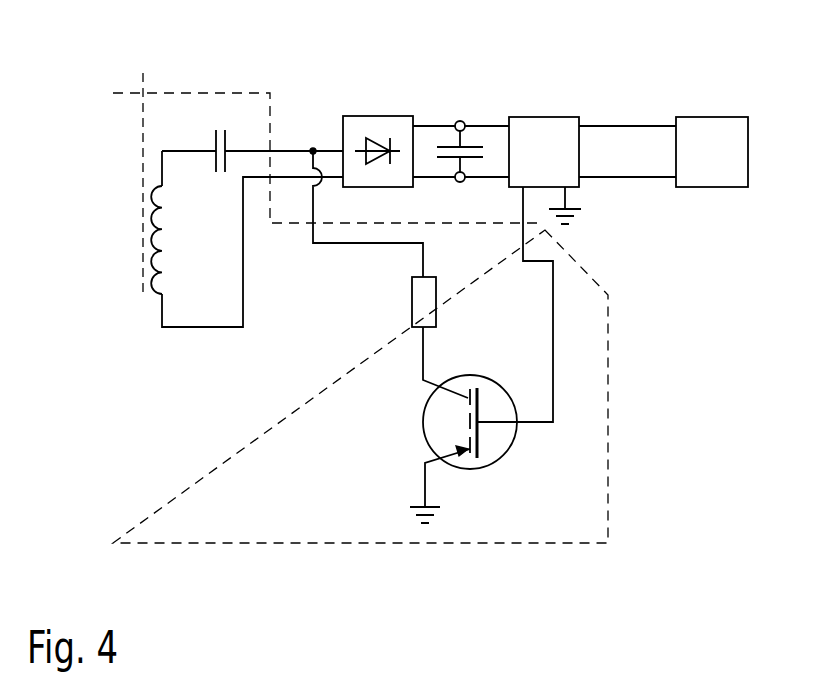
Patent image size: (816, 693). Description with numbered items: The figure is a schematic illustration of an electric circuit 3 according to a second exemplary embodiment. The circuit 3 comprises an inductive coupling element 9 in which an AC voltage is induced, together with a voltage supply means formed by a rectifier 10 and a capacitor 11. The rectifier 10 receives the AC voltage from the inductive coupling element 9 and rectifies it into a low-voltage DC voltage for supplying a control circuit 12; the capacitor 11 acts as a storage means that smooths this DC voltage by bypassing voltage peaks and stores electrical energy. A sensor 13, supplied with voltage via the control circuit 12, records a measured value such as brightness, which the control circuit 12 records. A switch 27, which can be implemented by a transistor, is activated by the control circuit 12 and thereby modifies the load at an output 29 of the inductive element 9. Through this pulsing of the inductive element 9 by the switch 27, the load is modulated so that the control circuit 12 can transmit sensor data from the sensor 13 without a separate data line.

The electric circuit 3 is at (716, 420).
The inductive coupling element 9 is at (150, 237).
The rectifier 10 is at (377, 114).
The capacitor 11 is at (447, 146).
The control circuit 12 is at (541, 115).
The sensor 13 is at (712, 115).
The switch 27 is at (513, 445).
The output of the inductive element 29 is at (313, 147).